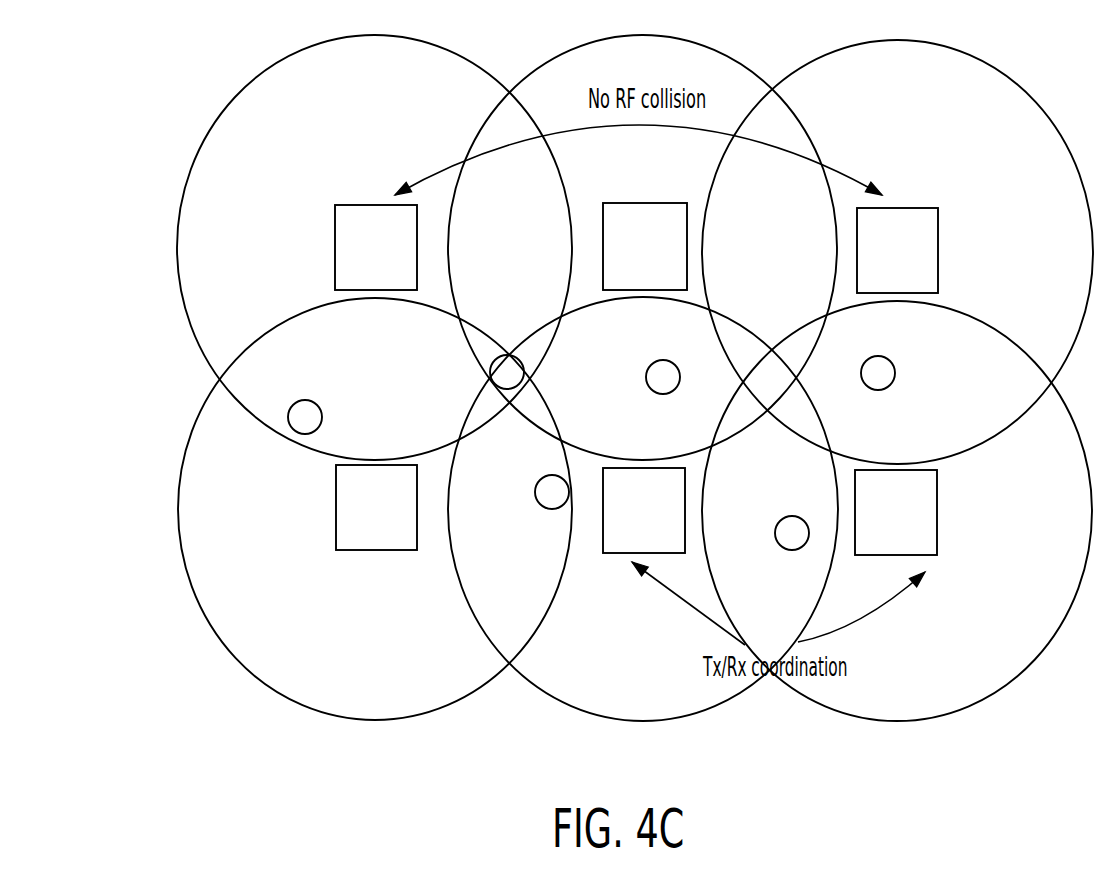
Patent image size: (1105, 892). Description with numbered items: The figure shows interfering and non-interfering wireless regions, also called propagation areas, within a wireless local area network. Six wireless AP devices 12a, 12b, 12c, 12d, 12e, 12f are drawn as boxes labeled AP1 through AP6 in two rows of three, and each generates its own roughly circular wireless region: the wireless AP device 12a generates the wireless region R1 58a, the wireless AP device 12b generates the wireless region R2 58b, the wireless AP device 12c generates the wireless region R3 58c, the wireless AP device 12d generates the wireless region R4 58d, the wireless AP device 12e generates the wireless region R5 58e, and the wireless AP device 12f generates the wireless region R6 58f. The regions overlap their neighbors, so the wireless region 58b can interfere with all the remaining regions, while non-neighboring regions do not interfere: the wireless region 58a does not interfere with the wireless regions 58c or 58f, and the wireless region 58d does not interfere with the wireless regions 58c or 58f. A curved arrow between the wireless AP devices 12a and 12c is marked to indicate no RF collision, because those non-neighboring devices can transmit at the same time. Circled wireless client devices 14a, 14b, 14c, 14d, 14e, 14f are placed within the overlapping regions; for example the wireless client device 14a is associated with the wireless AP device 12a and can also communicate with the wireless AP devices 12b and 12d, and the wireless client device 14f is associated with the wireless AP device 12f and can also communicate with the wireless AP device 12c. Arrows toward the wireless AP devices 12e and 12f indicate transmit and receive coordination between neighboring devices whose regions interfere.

The wireless AP device 12a is at (335, 250).
The wireless AP device 12b is at (645, 203).
The wireless AP device 12c is at (897, 208).
The wireless AP device 12d is at (336, 510).
The wireless AP device 12e is at (612, 553).
The wireless AP device 12f is at (937, 513).
The wireless client device 14a is at (500, 357).
The wireless client device 14b is at (646, 377).
The wireless client device 14c is at (895, 372).
The wireless client device 14d is at (305, 400).
The wireless client device 14e is at (535, 492).
The wireless client device 14f is at (788, 550).
The wireless region 58a is at (278, 79).
The wireless region 58b is at (592, 55).
The wireless region 58c is at (843, 58).
The wireless region 58d is at (377, 707).
The wireless region 58e is at (587, 693).
The wireless region 58f is at (893, 710).